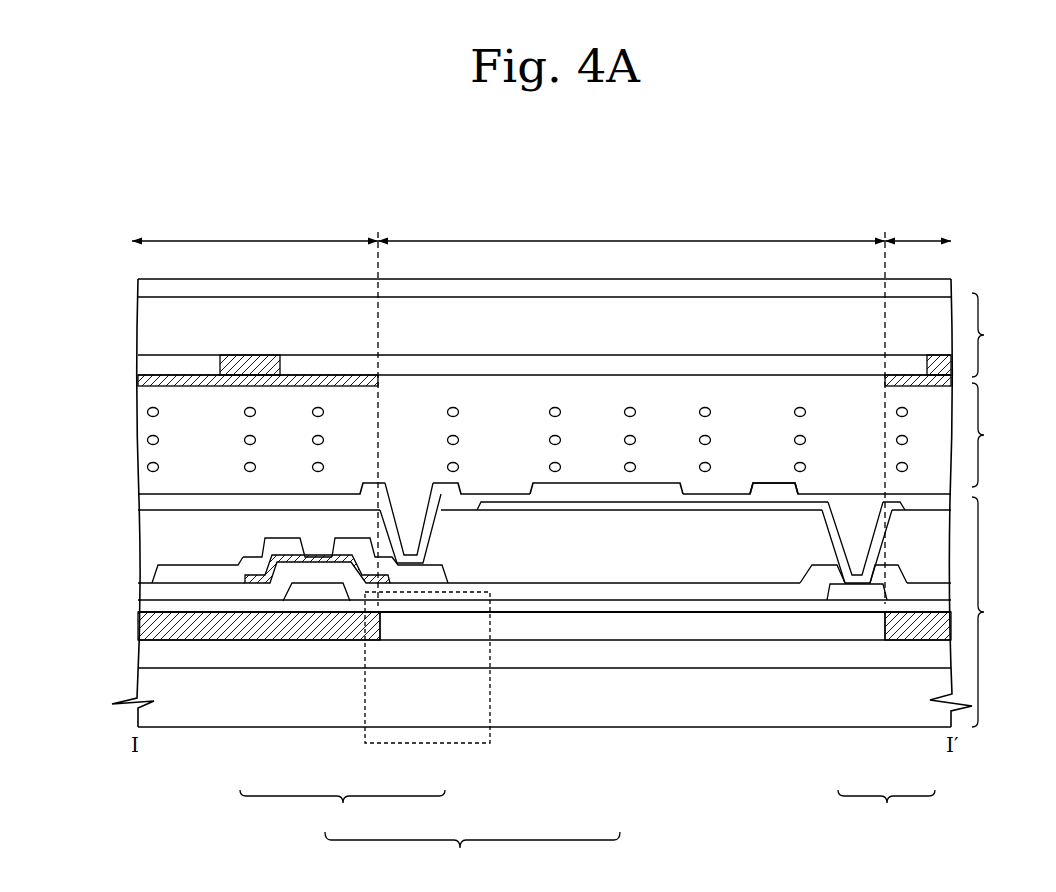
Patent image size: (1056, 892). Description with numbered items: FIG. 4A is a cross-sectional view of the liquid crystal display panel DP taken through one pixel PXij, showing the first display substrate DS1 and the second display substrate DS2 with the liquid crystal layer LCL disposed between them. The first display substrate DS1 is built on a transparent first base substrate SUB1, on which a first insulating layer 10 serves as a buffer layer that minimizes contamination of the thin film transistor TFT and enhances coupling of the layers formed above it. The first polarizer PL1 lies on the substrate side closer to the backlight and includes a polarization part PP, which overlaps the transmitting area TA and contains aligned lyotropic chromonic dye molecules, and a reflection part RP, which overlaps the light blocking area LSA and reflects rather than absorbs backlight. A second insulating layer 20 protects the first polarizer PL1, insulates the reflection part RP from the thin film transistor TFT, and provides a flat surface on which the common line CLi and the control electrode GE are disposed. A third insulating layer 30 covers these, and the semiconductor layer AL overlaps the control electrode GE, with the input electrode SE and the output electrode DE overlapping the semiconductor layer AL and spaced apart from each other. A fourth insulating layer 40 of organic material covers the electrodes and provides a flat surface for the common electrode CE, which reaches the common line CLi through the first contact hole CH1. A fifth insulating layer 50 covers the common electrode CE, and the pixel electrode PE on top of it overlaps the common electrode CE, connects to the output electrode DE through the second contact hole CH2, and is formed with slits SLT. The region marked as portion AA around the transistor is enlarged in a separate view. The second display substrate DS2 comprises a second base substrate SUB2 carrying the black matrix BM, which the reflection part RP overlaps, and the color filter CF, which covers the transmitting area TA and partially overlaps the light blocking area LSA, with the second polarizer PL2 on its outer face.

The second polarizer PL2 is at (148, 287).
The second base substrate SUB2 is at (148, 322).
The black matrix BM is at (245, 364).
The color filter CF is at (303, 363).
The light blocking area LSA is at (586, 409).
The transmitting area TA is at (541, 229).
The liquid crystal display panel DP is at (937, 194).
The second display substrate DS2 is at (1001, 335).
The liquid crystal layer LCL is at (591, 435).
The first display substrate DS1 is at (1001, 612).
The fifth insulating layer 50 is at (146, 500).
The fourth insulating layer 40 is at (146, 548).
The third insulating layer 30 is at (146, 579).
The second insulating layer 20 is at (146, 608).
The first insulating layer 10 is at (146, 652).
The first base substrate SUB1 is at (146, 690).
The second contact hole CH2 is at (407, 494).
The first contact hole CH1 is at (850, 515).
The slit SLT is at (727, 486).
The portion AA is at (467, 592).
The common line CLi is at (827, 592).
The input electrode SE is at (285, 548).
The control electrode GE is at (318, 593).
The semiconductor layer AL is at (372, 583).
The output electrode DE is at (418, 574).
The thin film transistor TFT is at (342, 813).
The pixel electrode PE is at (568, 488).
The common electrode CE is at (607, 508).
The pixel PXij is at (472, 859).
The polarization part PP is at (832, 636).
The reflection part RP is at (907, 636).
The first polarizer PL1 is at (536, 724).